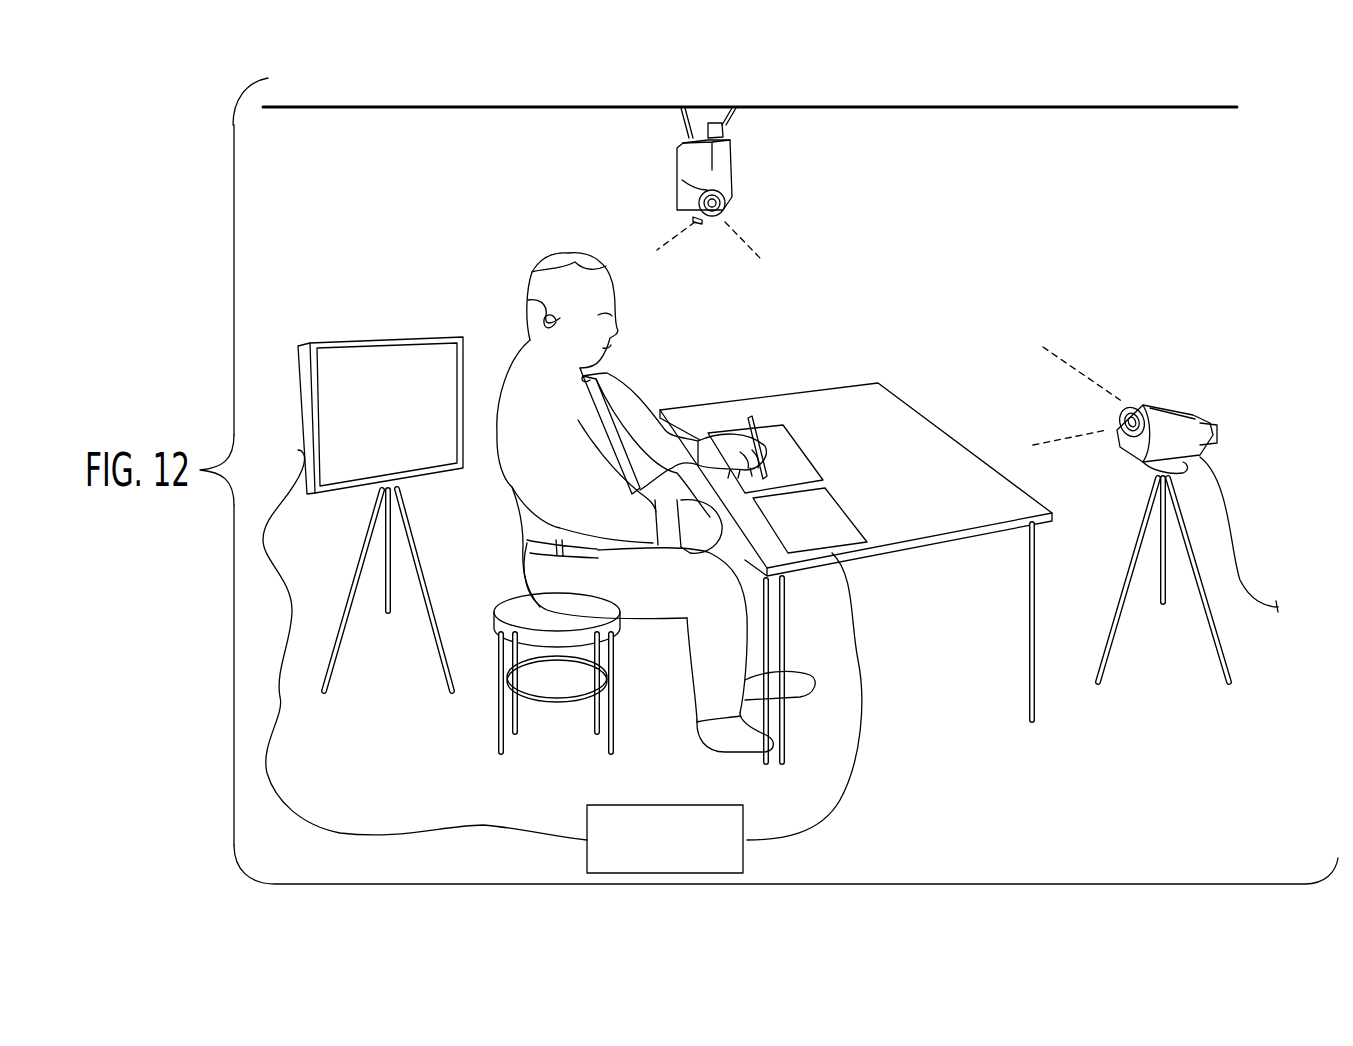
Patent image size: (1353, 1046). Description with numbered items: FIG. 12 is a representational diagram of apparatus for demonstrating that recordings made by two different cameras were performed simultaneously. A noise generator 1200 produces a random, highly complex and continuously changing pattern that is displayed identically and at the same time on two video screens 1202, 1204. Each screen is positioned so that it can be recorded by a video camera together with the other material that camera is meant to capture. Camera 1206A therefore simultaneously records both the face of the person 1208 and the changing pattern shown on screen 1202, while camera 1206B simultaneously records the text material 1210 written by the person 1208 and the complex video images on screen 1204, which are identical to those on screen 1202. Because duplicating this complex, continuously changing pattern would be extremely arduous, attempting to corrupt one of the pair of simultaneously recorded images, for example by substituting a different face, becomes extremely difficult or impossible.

The noise generator 1200 is at (700, 805).
The video screen 1202 is at (408, 415).
The video screen 1204 is at (818, 522).
The camera 1206A is at (1177, 413).
The camera 1206B is at (733, 195).
The person 1208 is at (566, 437).
The text material 1210 is at (793, 455).